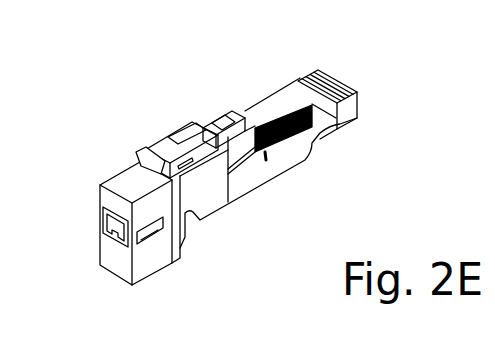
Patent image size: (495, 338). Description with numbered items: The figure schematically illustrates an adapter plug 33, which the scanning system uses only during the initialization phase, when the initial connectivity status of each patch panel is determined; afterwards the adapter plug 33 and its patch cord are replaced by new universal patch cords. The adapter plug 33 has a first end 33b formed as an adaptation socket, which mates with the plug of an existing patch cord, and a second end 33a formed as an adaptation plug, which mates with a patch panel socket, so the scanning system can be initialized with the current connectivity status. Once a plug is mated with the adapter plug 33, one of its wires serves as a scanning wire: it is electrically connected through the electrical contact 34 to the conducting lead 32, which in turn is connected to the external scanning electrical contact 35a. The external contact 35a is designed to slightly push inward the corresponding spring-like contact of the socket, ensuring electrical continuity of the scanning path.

The conducting lead 32 is at (263, 152).
The adapter plug 33 is at (236, 188).
The second end (adaptation plug) 33a is at (332, 76).
The first end (adaptation socket) 33b is at (103, 213).
The electrical contact 34 is at (155, 237).
The external electrical contact 35a is at (312, 125).